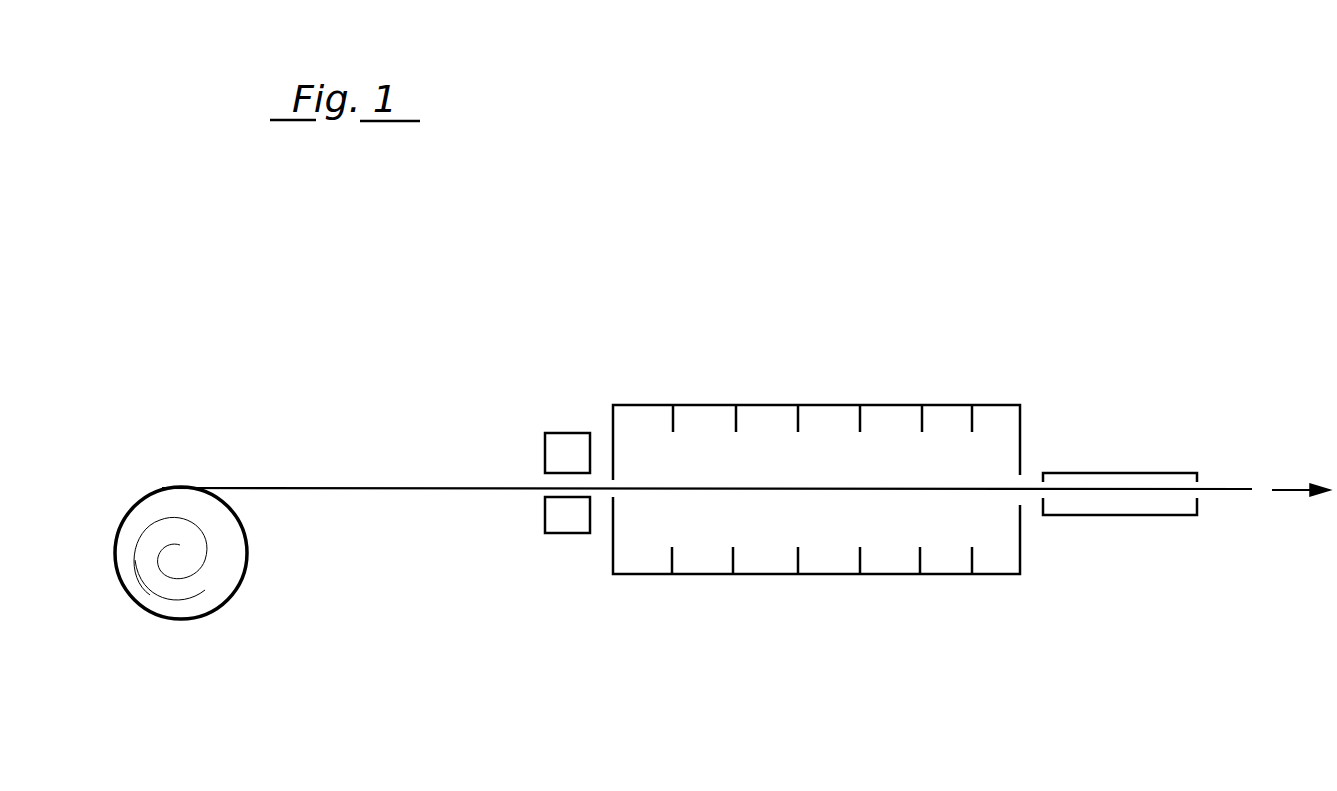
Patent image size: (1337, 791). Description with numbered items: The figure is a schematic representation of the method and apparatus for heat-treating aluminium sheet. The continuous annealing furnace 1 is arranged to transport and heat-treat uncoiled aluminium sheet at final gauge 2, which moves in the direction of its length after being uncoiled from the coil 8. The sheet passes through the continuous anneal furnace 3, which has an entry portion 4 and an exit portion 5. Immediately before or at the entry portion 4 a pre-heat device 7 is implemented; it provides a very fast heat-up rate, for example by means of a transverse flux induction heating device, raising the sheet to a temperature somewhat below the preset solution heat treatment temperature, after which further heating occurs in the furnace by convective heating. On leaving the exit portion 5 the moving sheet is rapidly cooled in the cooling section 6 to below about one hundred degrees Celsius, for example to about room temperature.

The continuous annealing furnace 1 is at (752, 372).
The aluminium sheet at final gauge 2 is at (322, 487).
The continuous anneal furnace 3 is at (766, 575).
The entry portion 4 is at (624, 498).
The exit portion 5 is at (1012, 497).
The cooling section 6 is at (1123, 517).
The pre-heat device 7 is at (575, 533).
The coil 8 is at (172, 605).